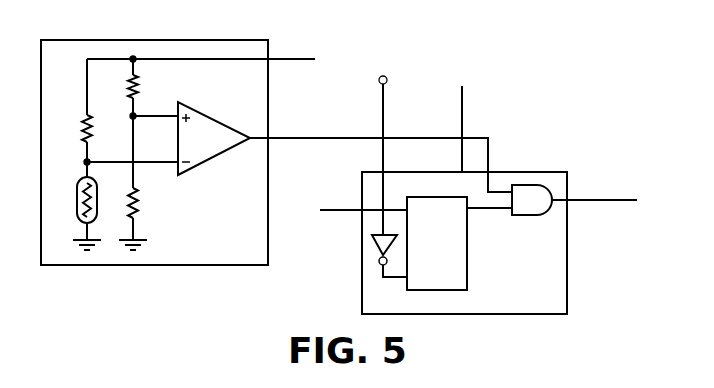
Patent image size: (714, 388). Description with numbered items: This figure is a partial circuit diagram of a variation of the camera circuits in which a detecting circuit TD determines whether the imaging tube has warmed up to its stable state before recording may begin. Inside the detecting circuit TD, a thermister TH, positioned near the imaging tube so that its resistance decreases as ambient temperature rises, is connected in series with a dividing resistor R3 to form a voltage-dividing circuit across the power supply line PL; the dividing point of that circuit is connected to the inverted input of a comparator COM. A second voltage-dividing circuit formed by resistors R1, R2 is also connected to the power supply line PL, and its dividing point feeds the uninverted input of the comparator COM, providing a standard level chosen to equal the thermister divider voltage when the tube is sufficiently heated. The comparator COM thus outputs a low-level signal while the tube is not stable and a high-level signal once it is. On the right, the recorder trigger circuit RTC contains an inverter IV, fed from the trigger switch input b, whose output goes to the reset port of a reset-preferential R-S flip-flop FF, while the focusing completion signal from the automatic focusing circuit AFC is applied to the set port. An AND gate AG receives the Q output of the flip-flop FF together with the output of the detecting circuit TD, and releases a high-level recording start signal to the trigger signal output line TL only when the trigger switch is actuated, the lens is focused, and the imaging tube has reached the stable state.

The detecting circuit TD is at (185, 265).
The power supply line PL is at (276, 112).
The resistor R1 is at (142, 88).
The resistor R2 is at (140, 198).
The dividing resistor R3 is at (95, 128).
The thermister TH is at (78, 197).
The comparator COM is at (215, 160).
The terminal b is at (389, 152).
The recorder trigger circuit RTC is at (515, 172).
The automatic focusing circuit AFC is at (342, 211).
The reset-preferential R-S flip-flop FF is at (446, 251).
The inverter IV is at (380, 265).
The AND gate AG is at (530, 216).
The trigger signal output line TL is at (605, 200).